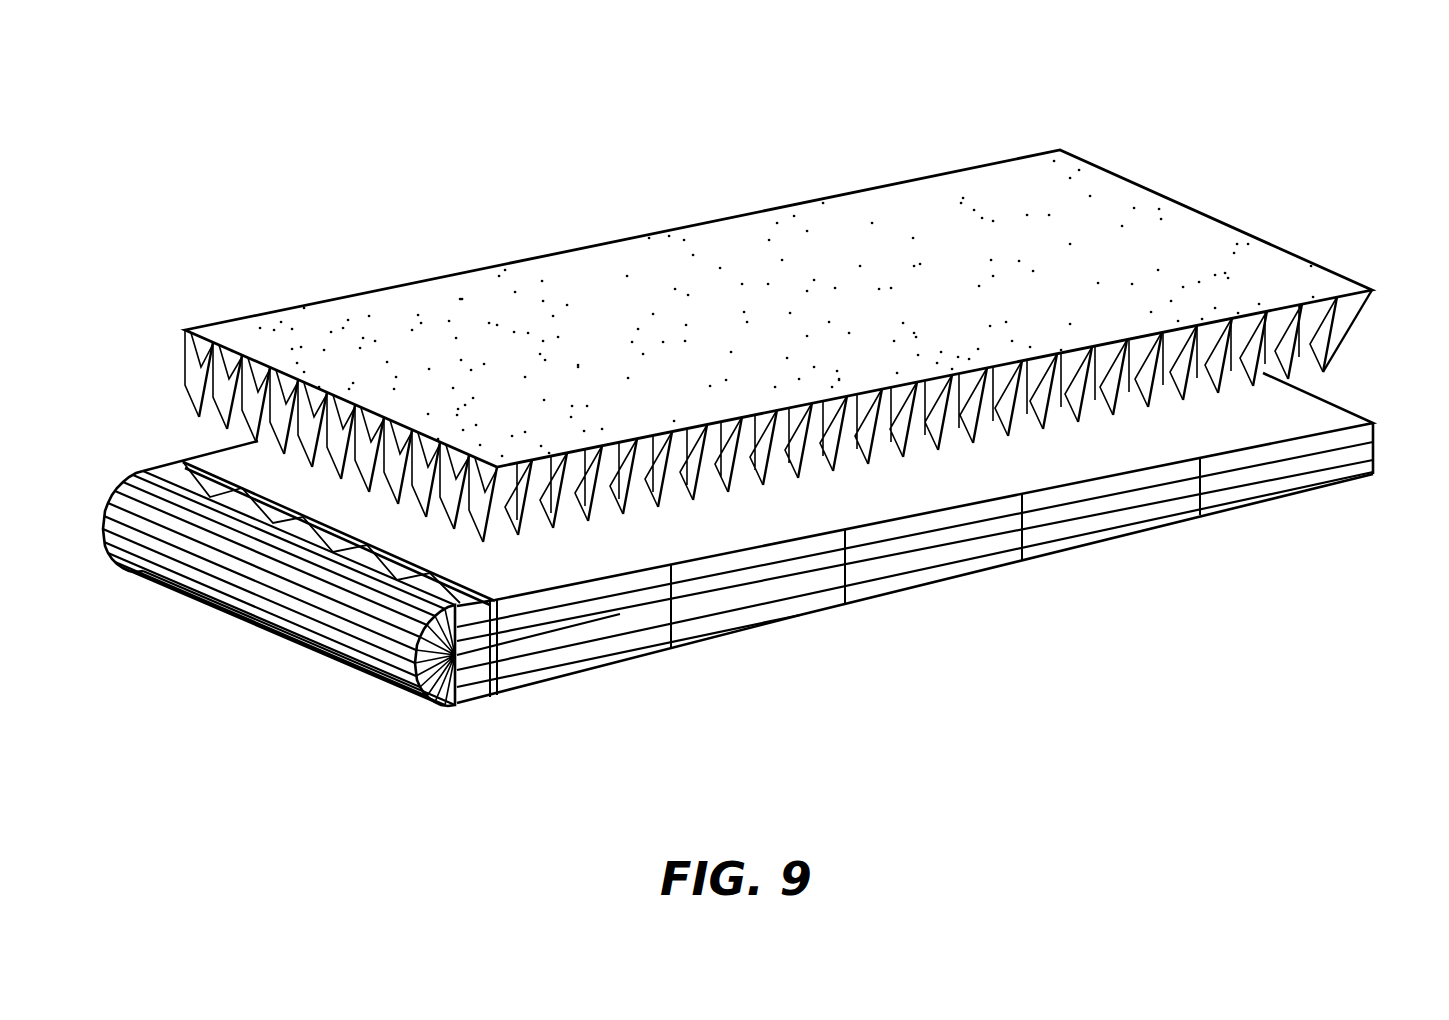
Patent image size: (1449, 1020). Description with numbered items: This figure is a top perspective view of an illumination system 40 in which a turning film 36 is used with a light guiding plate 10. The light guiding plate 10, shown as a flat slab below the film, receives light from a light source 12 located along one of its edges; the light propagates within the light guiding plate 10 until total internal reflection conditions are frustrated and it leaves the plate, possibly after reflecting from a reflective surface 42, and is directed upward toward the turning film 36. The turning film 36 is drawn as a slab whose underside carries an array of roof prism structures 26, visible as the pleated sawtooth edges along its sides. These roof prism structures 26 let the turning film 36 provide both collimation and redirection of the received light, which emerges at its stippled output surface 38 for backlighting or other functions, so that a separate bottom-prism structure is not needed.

The light guiding plate 10 is at (1183, 513).
The light source 12 is at (285, 633).
The roof prism structures 26 is at (1328, 370).
The turning film 36 is at (363, 293).
The output surface 38 is at (1058, 212).
The illumination system 40 is at (1295, 708).
The reflective surface 42 is at (857, 603).